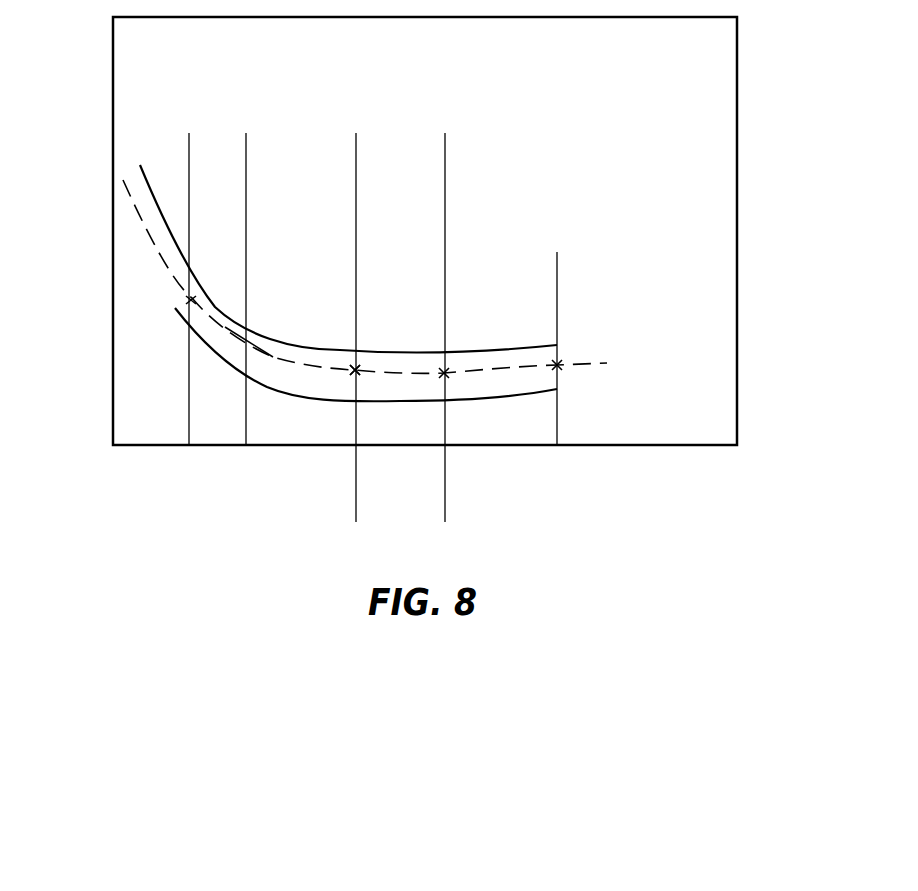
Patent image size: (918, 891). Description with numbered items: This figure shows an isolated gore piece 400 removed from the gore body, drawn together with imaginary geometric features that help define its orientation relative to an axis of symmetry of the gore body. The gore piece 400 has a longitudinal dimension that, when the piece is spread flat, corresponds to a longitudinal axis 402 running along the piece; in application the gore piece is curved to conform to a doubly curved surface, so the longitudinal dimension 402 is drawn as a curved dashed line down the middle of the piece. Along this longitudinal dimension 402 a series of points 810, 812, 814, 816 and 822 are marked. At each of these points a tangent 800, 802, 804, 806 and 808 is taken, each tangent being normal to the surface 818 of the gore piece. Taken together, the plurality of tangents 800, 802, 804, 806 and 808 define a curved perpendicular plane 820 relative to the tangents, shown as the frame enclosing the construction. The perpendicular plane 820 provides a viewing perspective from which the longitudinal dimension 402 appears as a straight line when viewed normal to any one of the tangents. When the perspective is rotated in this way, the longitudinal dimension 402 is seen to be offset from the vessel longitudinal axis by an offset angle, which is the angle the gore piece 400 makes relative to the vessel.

The gore piece 400 is at (315, 343).
The longitudinal axis 402 is at (597, 358).
The tangent 800 is at (190, 148).
The tangent 802 is at (246, 158).
The tangent 804 is at (357, 163).
The tangent 806 is at (445, 176).
The tangent 808 is at (557, 277).
The point 810 is at (190, 300).
The point 812 is at (245, 346).
The point 814 is at (357, 372).
The point 816 is at (446, 375).
The surface 818 is at (352, 370).
The perpendicular plane 820 is at (703, 95).
The point 822 is at (559, 367).